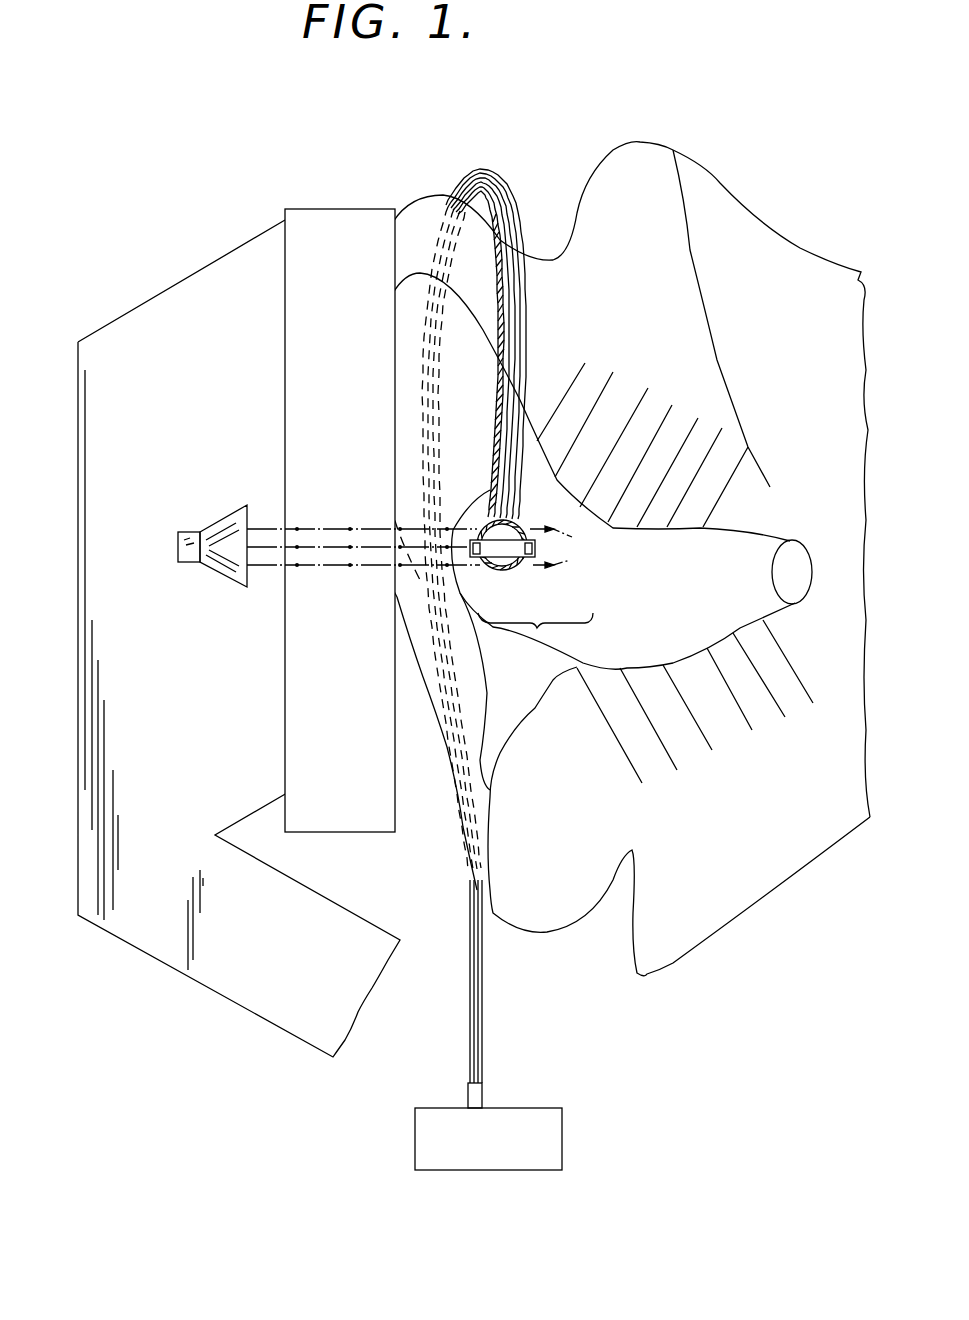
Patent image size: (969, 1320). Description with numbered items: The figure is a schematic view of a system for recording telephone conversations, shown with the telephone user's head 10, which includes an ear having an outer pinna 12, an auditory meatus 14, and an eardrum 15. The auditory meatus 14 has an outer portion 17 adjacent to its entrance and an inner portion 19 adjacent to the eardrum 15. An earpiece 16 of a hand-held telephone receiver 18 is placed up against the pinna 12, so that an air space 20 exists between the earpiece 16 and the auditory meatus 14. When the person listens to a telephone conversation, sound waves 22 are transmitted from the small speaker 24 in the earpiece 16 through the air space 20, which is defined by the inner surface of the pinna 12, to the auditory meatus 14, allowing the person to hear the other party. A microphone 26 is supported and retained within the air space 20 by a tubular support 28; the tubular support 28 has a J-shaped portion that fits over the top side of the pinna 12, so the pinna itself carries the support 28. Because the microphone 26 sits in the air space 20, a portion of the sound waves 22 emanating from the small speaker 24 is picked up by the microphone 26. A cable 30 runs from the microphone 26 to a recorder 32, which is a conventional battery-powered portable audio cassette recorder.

The head 10 is at (569, 376).
The pinna 12 is at (425, 213).
The auditory meatus 14 is at (615, 532).
The eardrum 15 is at (773, 573).
The earpiece 16 is at (253, 250).
The outer portion 17 is at (560, 500).
The hand-held telephone receiver 18 is at (129, 264).
The inner portion 19 is at (683, 540).
The air space 20 is at (572, 618).
The sound waves 22 is at (315, 527).
The small speaker 24 is at (232, 523).
The microphone 26 is at (503, 551).
The tubular support 28 is at (494, 431).
The cable 30 is at (470, 988).
The recorder 32 is at (528, 1110).